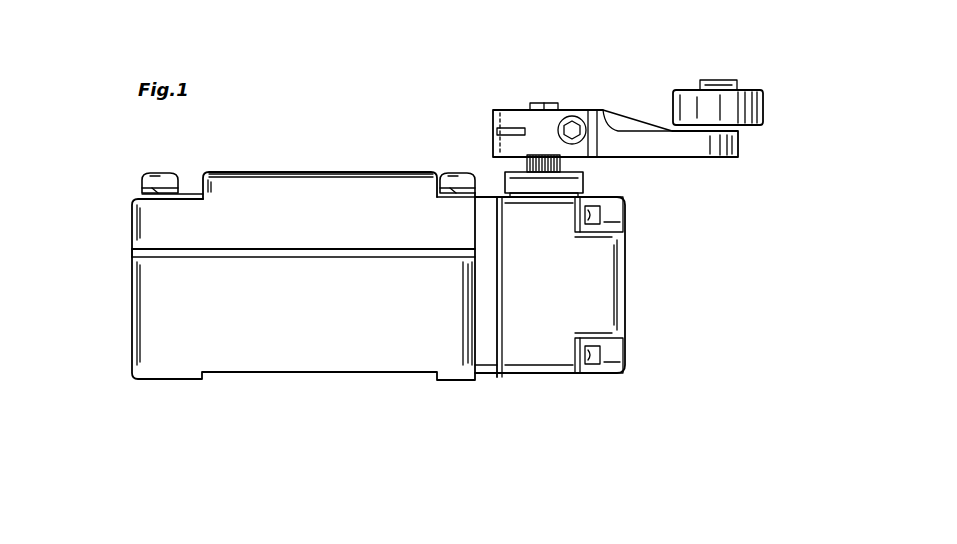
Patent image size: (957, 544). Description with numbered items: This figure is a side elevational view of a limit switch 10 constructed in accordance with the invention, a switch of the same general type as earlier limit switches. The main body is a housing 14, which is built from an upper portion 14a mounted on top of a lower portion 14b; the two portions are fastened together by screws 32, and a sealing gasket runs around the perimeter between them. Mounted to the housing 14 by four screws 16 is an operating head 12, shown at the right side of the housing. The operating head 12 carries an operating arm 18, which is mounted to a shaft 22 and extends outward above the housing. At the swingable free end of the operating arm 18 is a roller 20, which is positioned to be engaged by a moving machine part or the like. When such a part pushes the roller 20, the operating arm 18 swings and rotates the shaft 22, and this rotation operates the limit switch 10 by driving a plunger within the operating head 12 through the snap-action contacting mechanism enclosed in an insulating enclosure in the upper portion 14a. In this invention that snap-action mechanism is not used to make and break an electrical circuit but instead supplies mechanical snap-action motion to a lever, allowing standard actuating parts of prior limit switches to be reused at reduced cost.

The limit switch 10 is at (120, 250).
The operating head 12 is at (606, 276).
The housing 14 is at (255, 172).
The upper portion 14a is at (348, 188).
The lower portion 14b is at (162, 308).
The screws 16 is at (600, 208).
The operating arm 18 is at (617, 122).
The roller 20 is at (750, 108).
The shaft 22 is at (552, 103).
The screws 32 is at (162, 176).